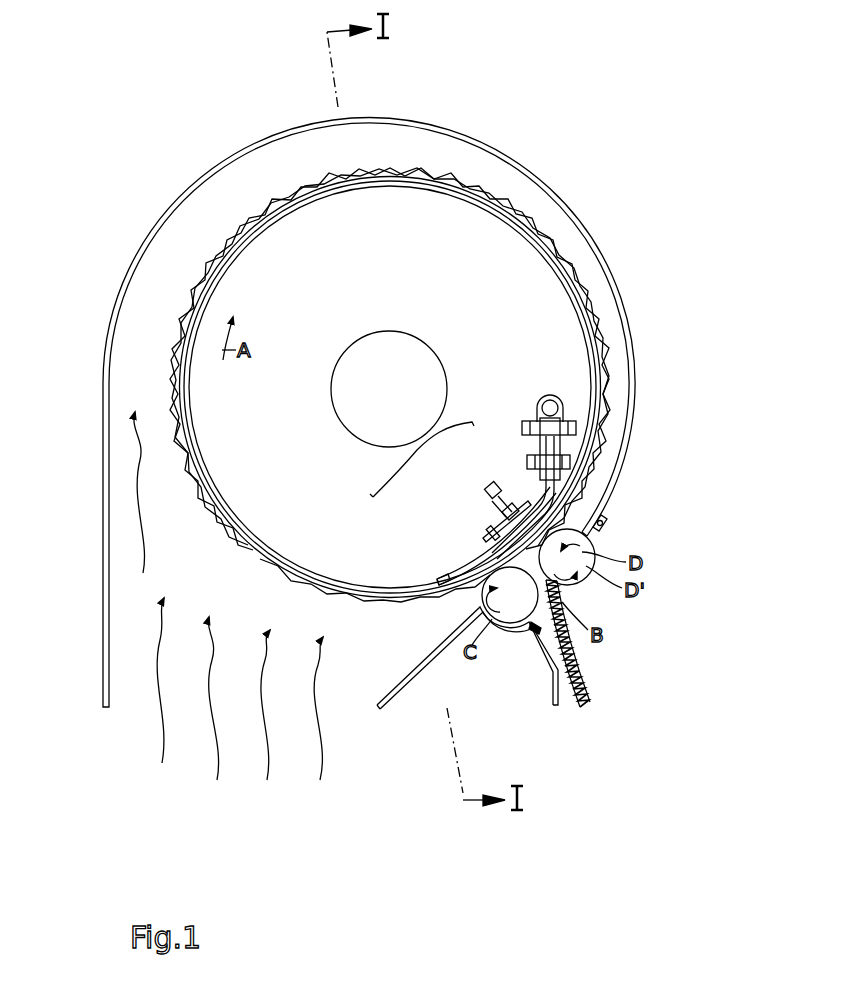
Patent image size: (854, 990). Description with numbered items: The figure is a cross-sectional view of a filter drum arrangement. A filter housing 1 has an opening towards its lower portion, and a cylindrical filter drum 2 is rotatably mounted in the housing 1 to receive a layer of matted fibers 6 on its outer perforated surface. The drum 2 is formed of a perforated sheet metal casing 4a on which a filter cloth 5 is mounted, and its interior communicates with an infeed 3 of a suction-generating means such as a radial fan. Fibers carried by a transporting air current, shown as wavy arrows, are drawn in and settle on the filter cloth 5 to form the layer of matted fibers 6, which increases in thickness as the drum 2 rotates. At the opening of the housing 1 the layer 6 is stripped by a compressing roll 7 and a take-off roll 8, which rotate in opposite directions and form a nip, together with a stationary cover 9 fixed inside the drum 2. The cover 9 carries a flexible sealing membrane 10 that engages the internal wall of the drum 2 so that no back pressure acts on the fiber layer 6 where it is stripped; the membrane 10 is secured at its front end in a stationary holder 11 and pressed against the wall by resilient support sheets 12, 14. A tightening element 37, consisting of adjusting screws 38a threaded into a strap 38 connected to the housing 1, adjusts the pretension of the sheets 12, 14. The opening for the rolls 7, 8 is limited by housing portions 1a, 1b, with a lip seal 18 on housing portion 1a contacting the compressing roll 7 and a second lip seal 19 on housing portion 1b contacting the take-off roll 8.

The filter housing 1 is at (243, 146).
The housing portion 1a is at (618, 486).
The housing portion 1b is at (524, 632).
The filter drum 2 is at (514, 236).
The infeed 3 is at (394, 348).
The perforated sheet metal casing 4a is at (290, 568).
The filter cloth 5 is at (236, 540).
The layer of matted fibers 6 is at (413, 170).
The compressing roll 7 is at (578, 580).
The take-off roll 8 is at (512, 603).
The cover 9 is at (417, 450).
The sealing membrane 10 is at (437, 580).
The holder 11 is at (518, 447).
The resilient support sheet 12 is at (530, 505).
The resilient support sheet 14 is at (457, 573).
The lip seal 18 is at (606, 529).
The second lip seal 19 is at (560, 634).
The tightening element 37 is at (470, 497).
The strap 38 is at (488, 512).
The adjusting screws 38a is at (488, 486).